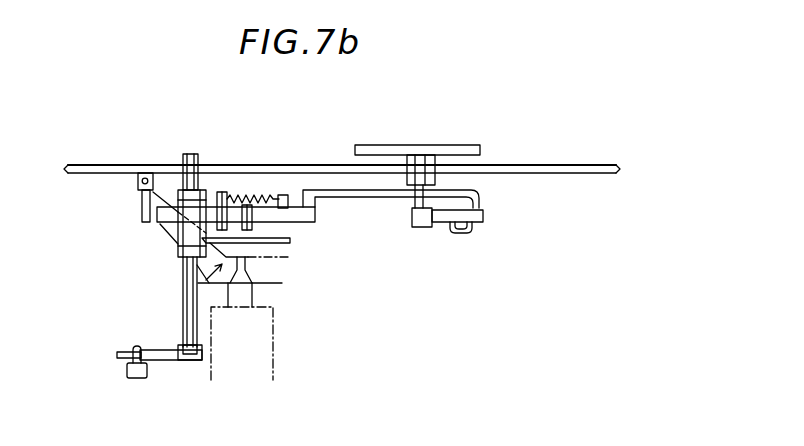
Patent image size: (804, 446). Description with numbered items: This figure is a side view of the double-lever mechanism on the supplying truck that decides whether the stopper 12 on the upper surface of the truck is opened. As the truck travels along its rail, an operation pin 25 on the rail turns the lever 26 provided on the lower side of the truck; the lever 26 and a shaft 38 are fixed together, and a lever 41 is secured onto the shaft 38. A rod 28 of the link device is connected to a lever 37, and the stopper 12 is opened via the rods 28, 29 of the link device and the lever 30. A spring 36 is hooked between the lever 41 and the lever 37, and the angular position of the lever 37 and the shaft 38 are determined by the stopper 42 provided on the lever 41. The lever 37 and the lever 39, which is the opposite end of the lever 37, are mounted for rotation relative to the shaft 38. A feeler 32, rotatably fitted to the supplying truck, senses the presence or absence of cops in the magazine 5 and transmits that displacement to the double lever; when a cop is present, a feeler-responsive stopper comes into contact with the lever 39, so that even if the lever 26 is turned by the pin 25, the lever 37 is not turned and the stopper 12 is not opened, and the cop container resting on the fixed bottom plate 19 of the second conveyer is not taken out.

The magazine 5 is at (266, 367).
The stopper 12 is at (468, 146).
The fixed bottom plate 19 is at (563, 175).
The operation pin 25 is at (128, 361).
The lever 26 is at (167, 360).
The rod 28 is at (362, 198).
The rod 29 is at (462, 232).
The lever 30 is at (484, 215).
The feeler 32 is at (172, 230).
The spring 36 is at (258, 200).
The lever 37 is at (294, 224).
The shaft 38 is at (185, 309).
The lever 39 is at (171, 229).
The lever 41 is at (253, 228).
The stopper 42 is at (262, 244).